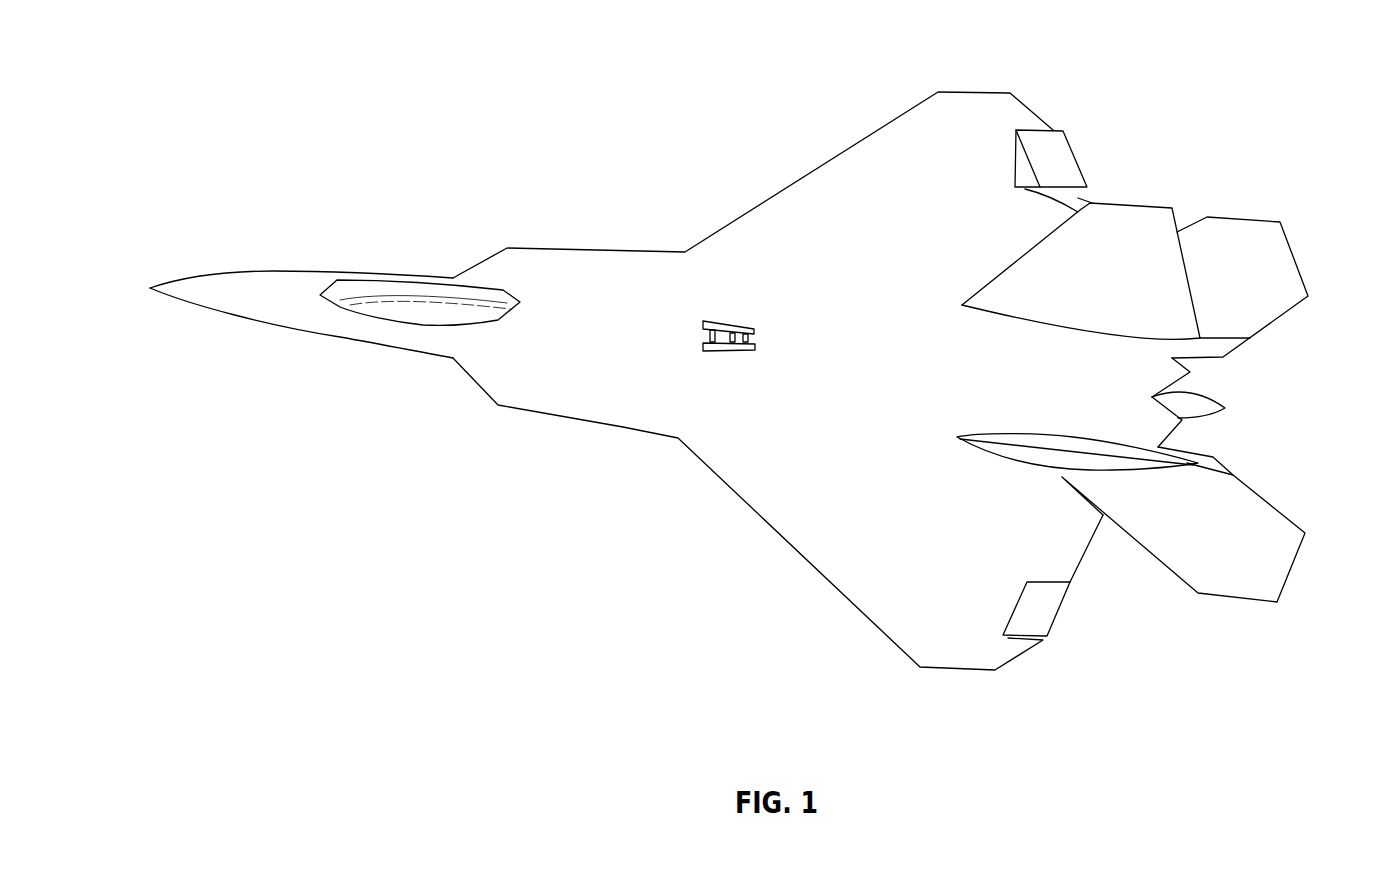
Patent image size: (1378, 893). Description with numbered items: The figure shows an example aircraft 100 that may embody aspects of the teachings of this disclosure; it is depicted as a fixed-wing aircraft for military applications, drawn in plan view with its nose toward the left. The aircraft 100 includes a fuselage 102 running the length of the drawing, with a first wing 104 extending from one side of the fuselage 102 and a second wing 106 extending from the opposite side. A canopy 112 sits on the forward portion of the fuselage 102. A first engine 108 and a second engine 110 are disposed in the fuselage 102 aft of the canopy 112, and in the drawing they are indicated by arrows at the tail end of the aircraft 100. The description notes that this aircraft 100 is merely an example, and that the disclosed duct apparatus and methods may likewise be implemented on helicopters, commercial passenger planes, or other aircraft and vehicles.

The aircraft 100 is at (739, 359).
The fuselage 102 is at (577, 280).
The first wing 104 is at (830, 512).
The second wing 106 is at (912, 177).
The first engine 108 is at (1182, 421).
The second engine 110 is at (1190, 372).
The canopy 112 is at (387, 289).